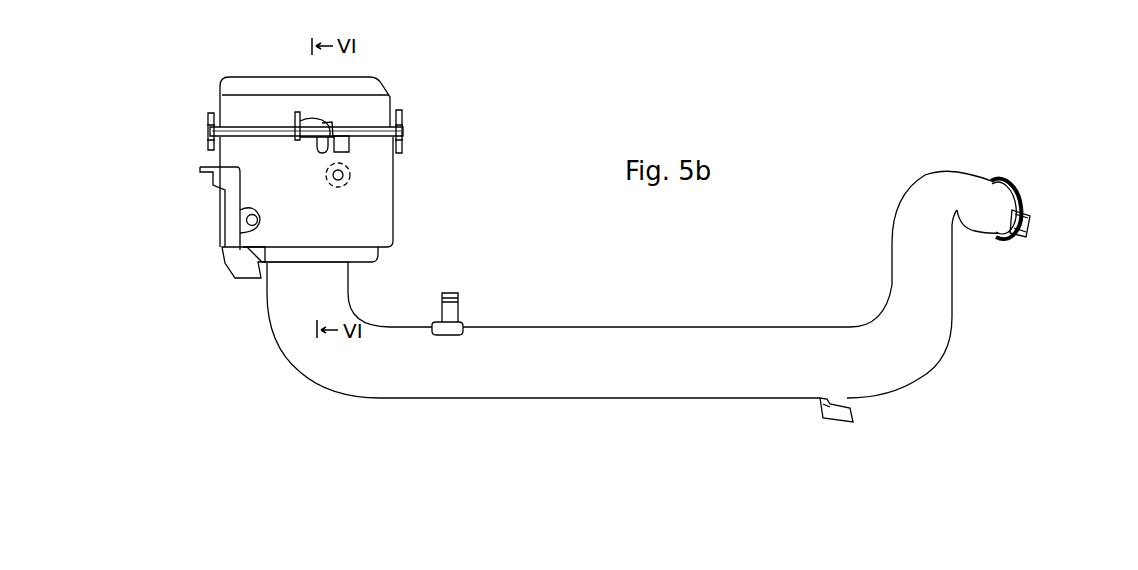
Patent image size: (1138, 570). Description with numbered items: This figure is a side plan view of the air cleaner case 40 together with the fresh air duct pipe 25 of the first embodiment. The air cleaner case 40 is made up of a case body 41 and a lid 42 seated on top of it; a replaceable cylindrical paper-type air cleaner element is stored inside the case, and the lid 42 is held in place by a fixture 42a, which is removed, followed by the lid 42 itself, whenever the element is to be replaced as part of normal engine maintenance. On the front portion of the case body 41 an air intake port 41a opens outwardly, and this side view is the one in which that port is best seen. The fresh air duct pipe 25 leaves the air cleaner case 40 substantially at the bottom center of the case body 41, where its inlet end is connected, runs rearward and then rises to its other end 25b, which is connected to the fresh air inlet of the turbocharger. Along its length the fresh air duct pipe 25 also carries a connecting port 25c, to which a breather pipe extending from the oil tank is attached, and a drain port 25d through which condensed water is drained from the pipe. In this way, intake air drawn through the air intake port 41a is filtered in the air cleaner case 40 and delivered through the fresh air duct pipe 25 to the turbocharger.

The fresh air duct pipe 25 is at (732, 345).
The other end of the fresh air duct pipe 25b is at (1020, 197).
The connecting port 25c is at (460, 293).
The drain port 25d is at (853, 408).
The air cleaner case 40 is at (412, 176).
The case body 41 is at (377, 213).
The air intake port 41a is at (215, 229).
The lid 42 is at (373, 93).
The fixture 42a is at (298, 112).